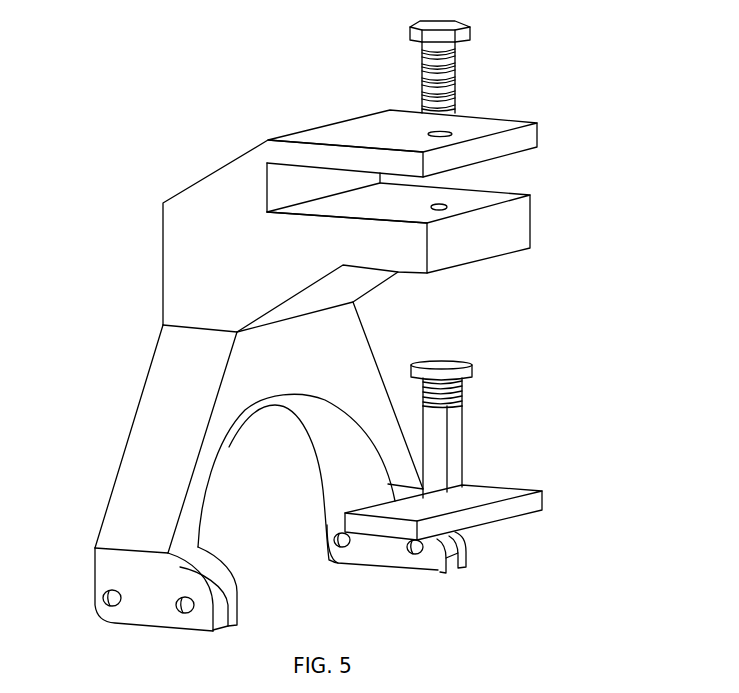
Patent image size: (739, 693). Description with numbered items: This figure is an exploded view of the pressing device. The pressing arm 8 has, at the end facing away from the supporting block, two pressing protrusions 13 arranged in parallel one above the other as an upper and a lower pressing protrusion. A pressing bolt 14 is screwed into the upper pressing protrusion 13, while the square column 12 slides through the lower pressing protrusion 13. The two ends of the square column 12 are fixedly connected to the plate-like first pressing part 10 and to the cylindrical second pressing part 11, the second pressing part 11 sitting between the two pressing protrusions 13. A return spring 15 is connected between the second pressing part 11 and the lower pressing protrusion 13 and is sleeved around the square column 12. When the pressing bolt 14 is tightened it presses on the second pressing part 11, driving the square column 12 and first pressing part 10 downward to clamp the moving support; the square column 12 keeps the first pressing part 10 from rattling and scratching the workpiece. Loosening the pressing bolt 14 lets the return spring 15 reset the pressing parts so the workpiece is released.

The pressing arm 8 is at (210, 310).
The first pressing part 10 is at (483, 493).
The second pressing part 11 is at (447, 362).
The square column 12 is at (437, 455).
The pressing protrusion 13 is at (480, 213).
The pressing bolt 14 is at (453, 85).
The return spring 15 is at (460, 388).